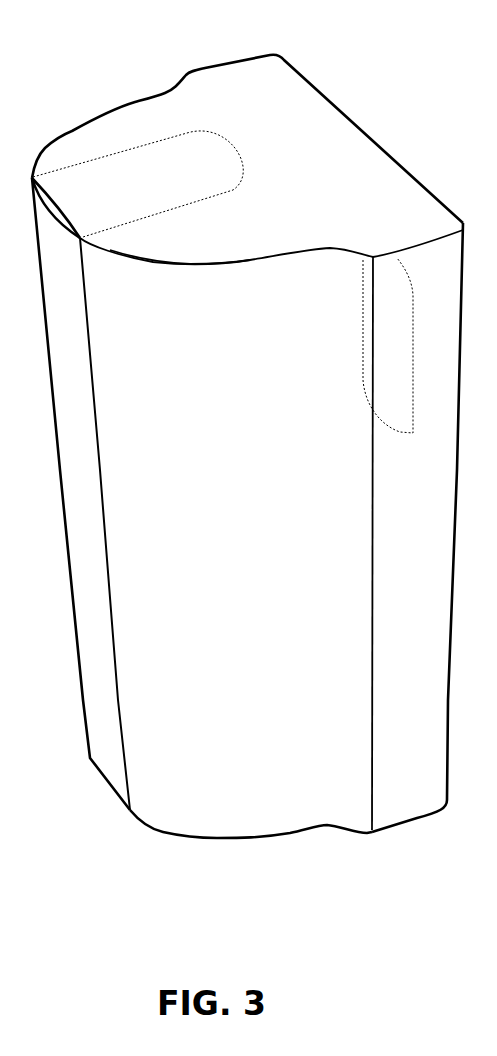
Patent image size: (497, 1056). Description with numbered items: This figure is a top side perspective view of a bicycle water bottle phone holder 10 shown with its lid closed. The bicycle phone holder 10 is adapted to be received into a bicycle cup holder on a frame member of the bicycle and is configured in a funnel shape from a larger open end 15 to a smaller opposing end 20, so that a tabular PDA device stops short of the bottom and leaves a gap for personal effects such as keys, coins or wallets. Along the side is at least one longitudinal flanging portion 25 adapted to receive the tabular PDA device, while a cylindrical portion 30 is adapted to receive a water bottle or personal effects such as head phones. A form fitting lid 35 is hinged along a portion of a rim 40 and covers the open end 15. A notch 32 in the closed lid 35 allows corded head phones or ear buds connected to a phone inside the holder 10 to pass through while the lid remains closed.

The bicycle phone holder 10 is at (165, 762).
The open end 15 is at (103, 105).
The opposing end 20 is at (218, 842).
The longitudinal flanging portion 25 is at (438, 465).
The cylindrical portion 30 is at (203, 533).
The notch 32 is at (120, 183).
The form fitting lid 35 is at (265, 200).
The rim 40 is at (217, 268).